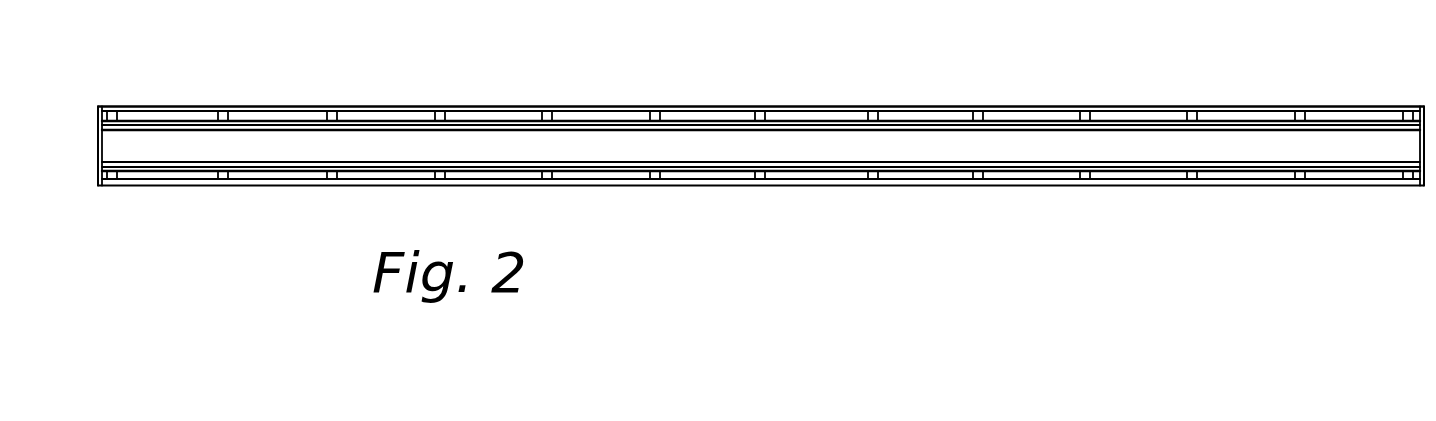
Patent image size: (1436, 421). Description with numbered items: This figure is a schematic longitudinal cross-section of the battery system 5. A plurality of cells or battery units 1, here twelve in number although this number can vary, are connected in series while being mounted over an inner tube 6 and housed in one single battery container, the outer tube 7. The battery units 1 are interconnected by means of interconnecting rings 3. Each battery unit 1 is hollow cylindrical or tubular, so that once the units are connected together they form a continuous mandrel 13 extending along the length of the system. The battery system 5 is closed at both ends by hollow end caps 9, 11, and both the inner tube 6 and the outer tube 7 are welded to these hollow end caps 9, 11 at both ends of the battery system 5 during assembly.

The battery unit 1 is at (577, 115).
The interconnecting ring 3 is at (1187, 112).
The battery system 5 is at (735, 84).
The inner tube 6 is at (855, 164).
The outer tube 7 is at (912, 107).
The hollow end cap 9 is at (100, 162).
The hollow end cap 11 is at (1420, 163).
The continuous mandrel 13 is at (318, 127).